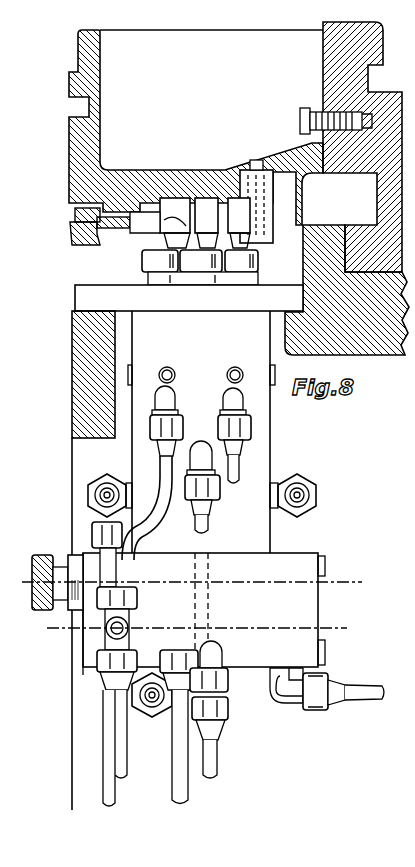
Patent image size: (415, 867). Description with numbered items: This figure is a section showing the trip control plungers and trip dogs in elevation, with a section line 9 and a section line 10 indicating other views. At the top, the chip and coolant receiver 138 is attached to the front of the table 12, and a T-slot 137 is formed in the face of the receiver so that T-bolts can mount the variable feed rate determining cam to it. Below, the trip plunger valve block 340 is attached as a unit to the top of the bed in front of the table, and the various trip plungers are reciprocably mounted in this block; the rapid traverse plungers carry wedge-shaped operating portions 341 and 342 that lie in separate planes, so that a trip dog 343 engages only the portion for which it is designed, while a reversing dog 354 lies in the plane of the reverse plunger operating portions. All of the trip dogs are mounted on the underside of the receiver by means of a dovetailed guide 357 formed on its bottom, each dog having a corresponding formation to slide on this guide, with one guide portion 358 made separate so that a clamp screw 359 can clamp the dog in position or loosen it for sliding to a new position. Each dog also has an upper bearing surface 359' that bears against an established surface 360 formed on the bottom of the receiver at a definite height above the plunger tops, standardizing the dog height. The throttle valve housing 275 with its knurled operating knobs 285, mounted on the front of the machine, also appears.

The section line 9- 9 is at (31, 570).
The bed 10 is at (351, 640).
The table 12 is at (370, 47).
The T-slot 137 is at (82, 107).
The chip and coolant receiver 138 is at (207, 16).
The housing 275 is at (264, 453).
The knurled operating knobs 285 is at (50, 560).
The trip plunger valve block 340 is at (75, 304).
The wedge-shaped operating portion 341 is at (195, 252).
The wedge-shaped operating portion 342 is at (208, 252).
The trip dog 343 is at (160, 228).
The reversing dog 354 is at (153, 220).
The dovetailed guide 357 is at (125, 215).
The guide portion 358 is at (72, 239).
The clamp screw 359 is at (65, 214).
The upper bearing surface 359' is at (195, 200).
The established surface 360 is at (203, 202).